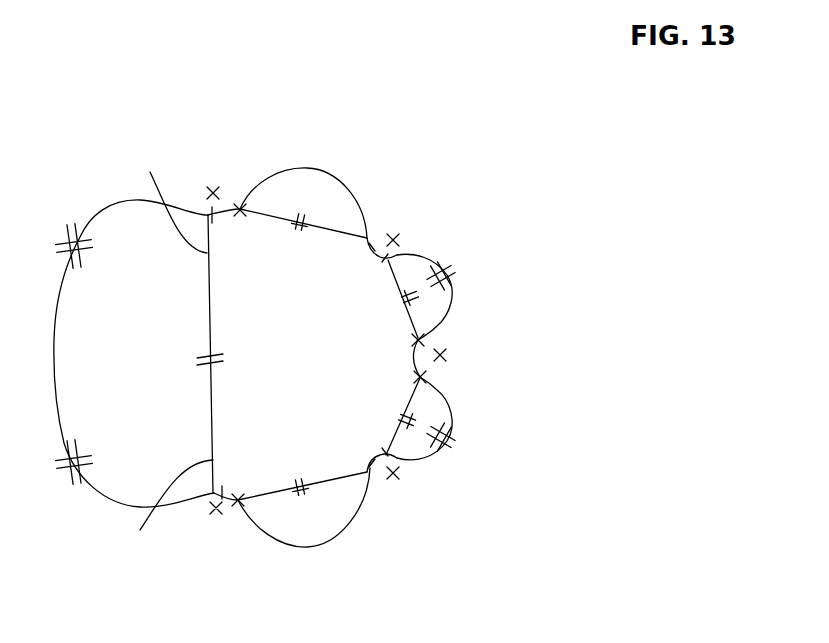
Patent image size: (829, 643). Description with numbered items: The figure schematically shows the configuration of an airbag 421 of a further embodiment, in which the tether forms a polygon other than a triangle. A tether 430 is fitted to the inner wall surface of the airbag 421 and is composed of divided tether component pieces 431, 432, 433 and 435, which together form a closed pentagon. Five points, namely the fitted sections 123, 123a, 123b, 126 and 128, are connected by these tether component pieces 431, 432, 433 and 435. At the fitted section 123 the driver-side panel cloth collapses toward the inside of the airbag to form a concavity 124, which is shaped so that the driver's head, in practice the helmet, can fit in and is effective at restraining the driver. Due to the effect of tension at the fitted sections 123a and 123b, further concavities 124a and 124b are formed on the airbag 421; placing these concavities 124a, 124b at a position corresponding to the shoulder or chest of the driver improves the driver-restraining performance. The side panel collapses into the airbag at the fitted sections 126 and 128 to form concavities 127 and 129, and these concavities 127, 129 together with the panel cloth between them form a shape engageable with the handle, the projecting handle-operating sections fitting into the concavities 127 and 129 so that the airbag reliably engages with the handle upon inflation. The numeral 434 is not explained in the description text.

The fitted section 126 is at (201, 210).
The concavity 127 is at (214, 184).
The tether component piece 433 is at (162, 198).
The curved connecting line 434 is at (165, 513).
The airbag 421 is at (320, 170).
The tether 430 is at (330, 217).
The tether component piece 432 is at (340, 219).
The fitted section 123a is at (377, 232).
The concavity 124a is at (399, 240).
The tether component piece 431 is at (422, 316).
The concavity 124 is at (445, 356).
The fitted section 123 is at (424, 345).
The concavity 124b is at (398, 478).
The fitted section 123b is at (377, 492).
The tether component piece 435 is at (340, 483).
The fitted section 128 is at (203, 508).
The concavity 129 is at (218, 516).